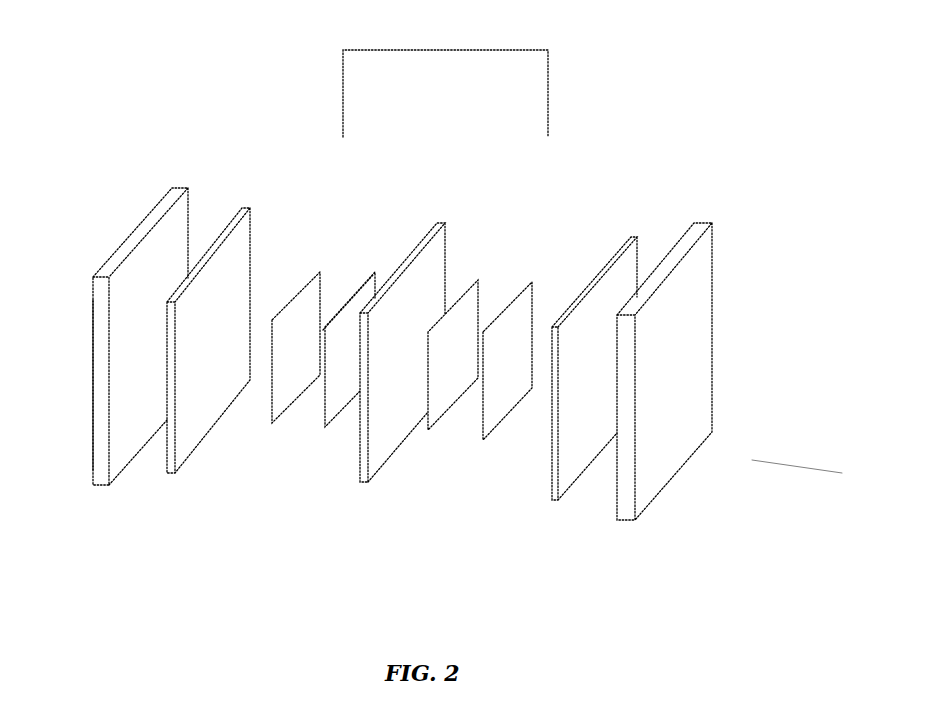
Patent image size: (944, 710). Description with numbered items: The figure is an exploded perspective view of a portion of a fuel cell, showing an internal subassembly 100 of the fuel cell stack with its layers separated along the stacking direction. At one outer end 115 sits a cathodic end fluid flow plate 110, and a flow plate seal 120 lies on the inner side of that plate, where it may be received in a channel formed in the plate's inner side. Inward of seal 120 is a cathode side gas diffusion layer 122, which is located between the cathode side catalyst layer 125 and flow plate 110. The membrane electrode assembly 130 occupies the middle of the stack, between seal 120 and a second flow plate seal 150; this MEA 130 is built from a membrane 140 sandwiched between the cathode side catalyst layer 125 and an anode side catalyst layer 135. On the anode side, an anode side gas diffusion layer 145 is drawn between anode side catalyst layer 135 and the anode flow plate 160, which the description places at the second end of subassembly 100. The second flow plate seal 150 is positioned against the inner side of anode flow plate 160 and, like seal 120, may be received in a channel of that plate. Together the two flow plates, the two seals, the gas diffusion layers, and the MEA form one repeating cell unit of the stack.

The internal subassembly 100 is at (755, 460).
The cathodic end fluid flow plate 110 is at (137, 232).
The outer end 115 is at (92, 385).
The flow plate seal 120 is at (178, 460).
The cathode side gas diffusion layer 122 is at (313, 283).
The cathode side catalyst layer 125 is at (337, 418).
The membrane electrode assembly 130 is at (440, 50).
The anode side catalyst layer 135 is at (435, 427).
The membrane 140 is at (370, 477).
The reflector 145 is at (495, 427).
The second flow plate seal 150 is at (603, 297).
The anode flow plate 160 is at (684, 387).